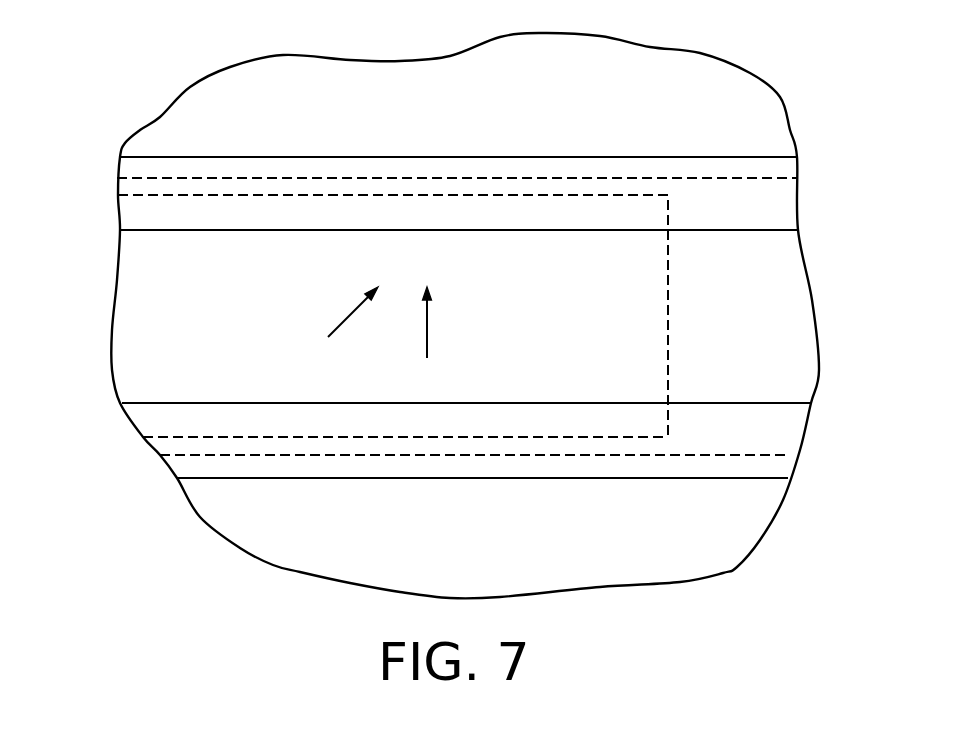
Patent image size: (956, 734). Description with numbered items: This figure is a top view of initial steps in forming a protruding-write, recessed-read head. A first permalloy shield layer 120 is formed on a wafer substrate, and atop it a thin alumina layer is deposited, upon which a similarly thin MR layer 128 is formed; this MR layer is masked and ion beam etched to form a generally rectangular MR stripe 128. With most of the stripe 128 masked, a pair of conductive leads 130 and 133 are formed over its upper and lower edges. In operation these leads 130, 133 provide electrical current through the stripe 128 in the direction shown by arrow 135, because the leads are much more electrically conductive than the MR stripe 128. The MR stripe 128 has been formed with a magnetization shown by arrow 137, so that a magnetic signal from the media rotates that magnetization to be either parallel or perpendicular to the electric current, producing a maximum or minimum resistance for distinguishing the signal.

The first permalloy shield layer 120 is at (733, 178).
The MR stripe 128 is at (135, 343).
The conductive lead 130 is at (178, 157).
The conductive lead 133 is at (215, 478).
The arrow 135 is at (427, 330).
The arrow 137 is at (343, 322).